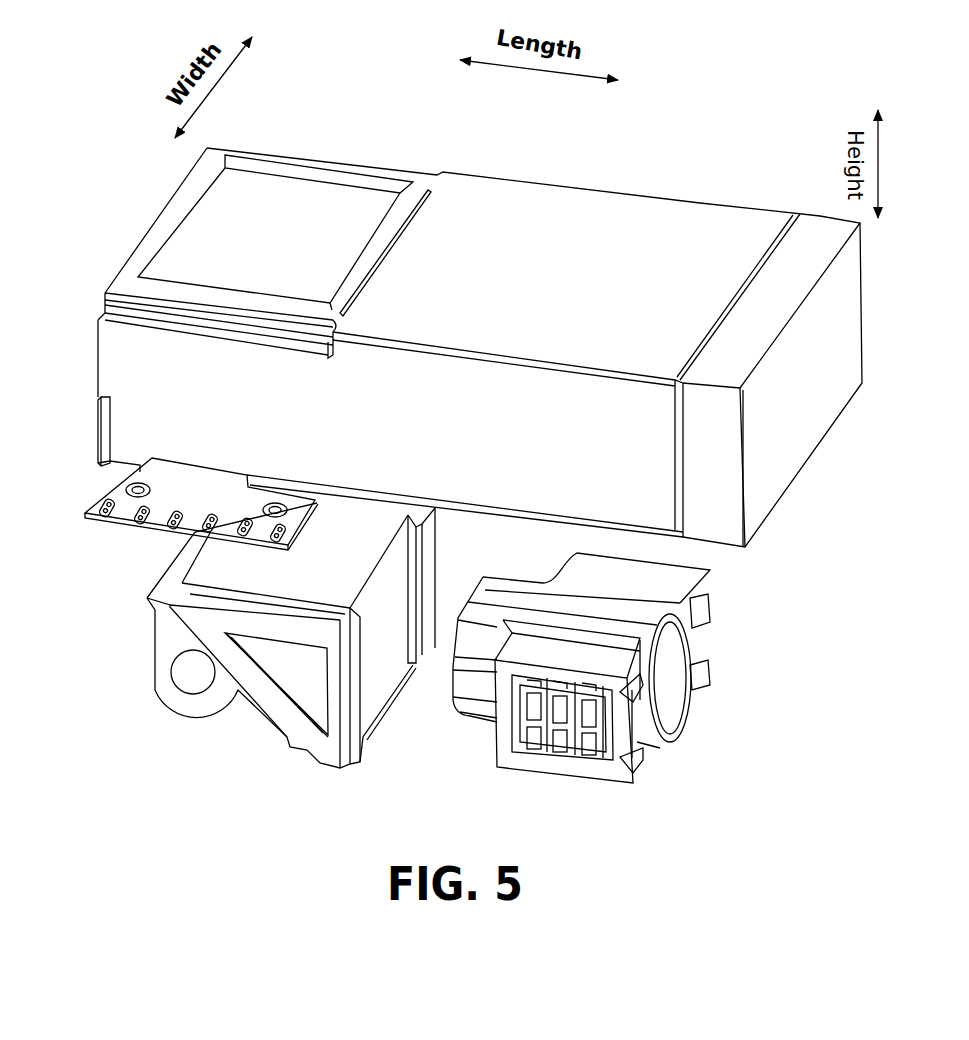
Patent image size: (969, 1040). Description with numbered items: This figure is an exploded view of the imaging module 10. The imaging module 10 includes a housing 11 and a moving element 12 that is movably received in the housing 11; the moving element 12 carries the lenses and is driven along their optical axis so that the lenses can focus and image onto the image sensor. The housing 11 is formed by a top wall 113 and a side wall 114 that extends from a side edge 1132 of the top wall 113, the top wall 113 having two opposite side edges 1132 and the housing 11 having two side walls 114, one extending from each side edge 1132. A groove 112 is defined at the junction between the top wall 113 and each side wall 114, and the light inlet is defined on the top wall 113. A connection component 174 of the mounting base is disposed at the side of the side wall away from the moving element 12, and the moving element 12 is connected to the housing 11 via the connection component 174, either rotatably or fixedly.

The imaging module 10 is at (130, 131).
The housing 11 is at (195, 211).
The top wall 113 is at (588, 207).
The side edge 1132 is at (604, 383).
The groove 112 is at (103, 313).
The side wall 114 is at (140, 420).
The moving element 12 is at (377, 692).
The connection component 174 is at (202, 700).